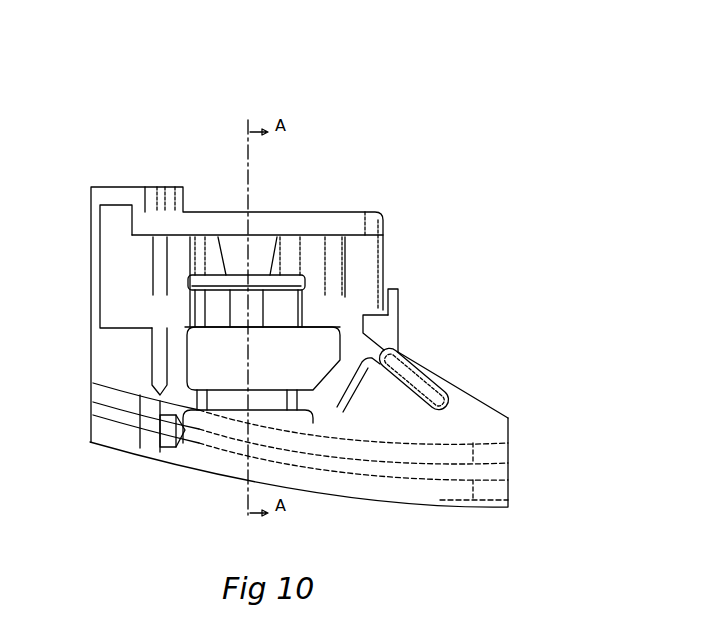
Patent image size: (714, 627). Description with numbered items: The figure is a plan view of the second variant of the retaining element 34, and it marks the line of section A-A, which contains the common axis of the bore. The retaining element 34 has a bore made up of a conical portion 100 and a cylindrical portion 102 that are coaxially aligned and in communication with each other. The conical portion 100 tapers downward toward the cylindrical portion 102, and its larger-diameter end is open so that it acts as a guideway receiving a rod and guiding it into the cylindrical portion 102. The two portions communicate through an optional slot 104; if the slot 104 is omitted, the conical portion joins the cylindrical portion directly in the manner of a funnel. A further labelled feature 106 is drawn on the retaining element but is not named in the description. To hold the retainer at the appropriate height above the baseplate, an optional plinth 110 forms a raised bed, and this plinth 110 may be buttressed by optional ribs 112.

The retaining element 34 is at (427, 131).
The conical portion 100 is at (262, 248).
The cylindrical portion 102 is at (257, 305).
The slot 104 is at (292, 282).
The top plate 106 is at (217, 223).
The plinth 110 is at (127, 277).
The ribs 112 is at (393, 367).